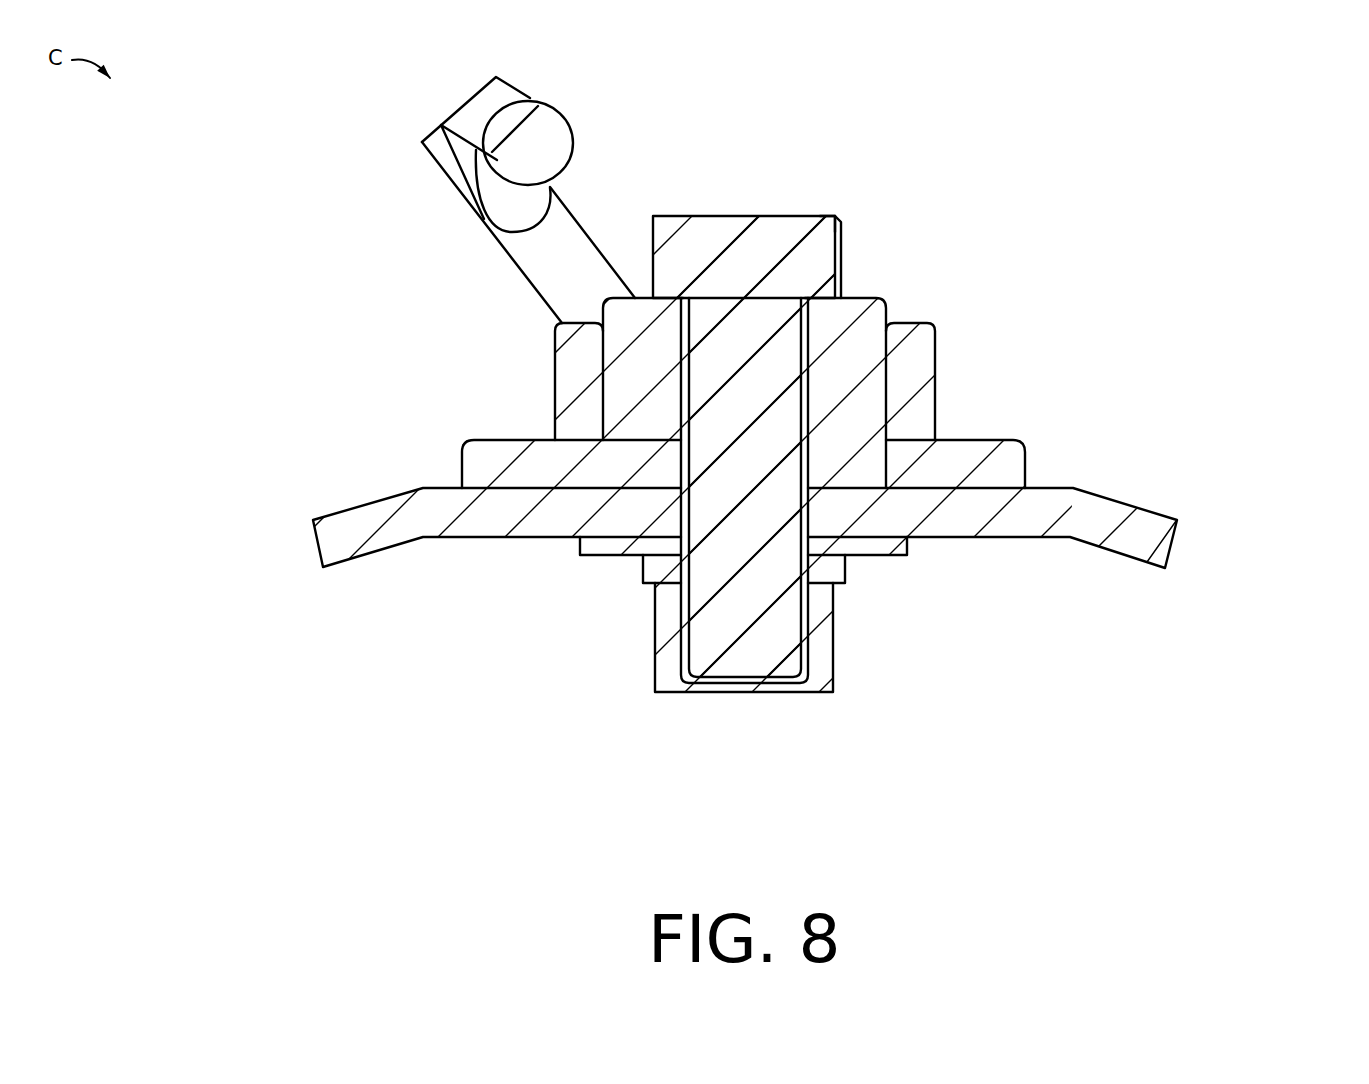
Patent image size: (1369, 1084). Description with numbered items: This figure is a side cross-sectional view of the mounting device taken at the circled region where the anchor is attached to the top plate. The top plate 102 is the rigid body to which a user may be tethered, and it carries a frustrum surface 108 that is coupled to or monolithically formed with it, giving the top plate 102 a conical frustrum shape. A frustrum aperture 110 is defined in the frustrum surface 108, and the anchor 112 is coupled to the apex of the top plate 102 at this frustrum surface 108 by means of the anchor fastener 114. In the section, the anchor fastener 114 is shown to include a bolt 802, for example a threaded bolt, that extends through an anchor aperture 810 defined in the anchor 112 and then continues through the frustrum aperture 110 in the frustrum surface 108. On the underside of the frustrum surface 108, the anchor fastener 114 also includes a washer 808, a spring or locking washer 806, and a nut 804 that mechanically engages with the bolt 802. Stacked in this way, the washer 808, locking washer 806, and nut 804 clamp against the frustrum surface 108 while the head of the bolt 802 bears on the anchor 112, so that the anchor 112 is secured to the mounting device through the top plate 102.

The top plate 102 is at (1133, 507).
The frustrum surface 108 is at (1040, 487).
The frustrum aperture 110 is at (767, 500).
The anchor 112 is at (453, 158).
The anchor fastener 114 is at (862, 250).
The bolt 802 is at (832, 215).
The nut 804 is at (833, 688).
The spring or locking washer 806 is at (847, 583).
The washer 808 is at (910, 555).
The anchor aperture 810 is at (778, 357).